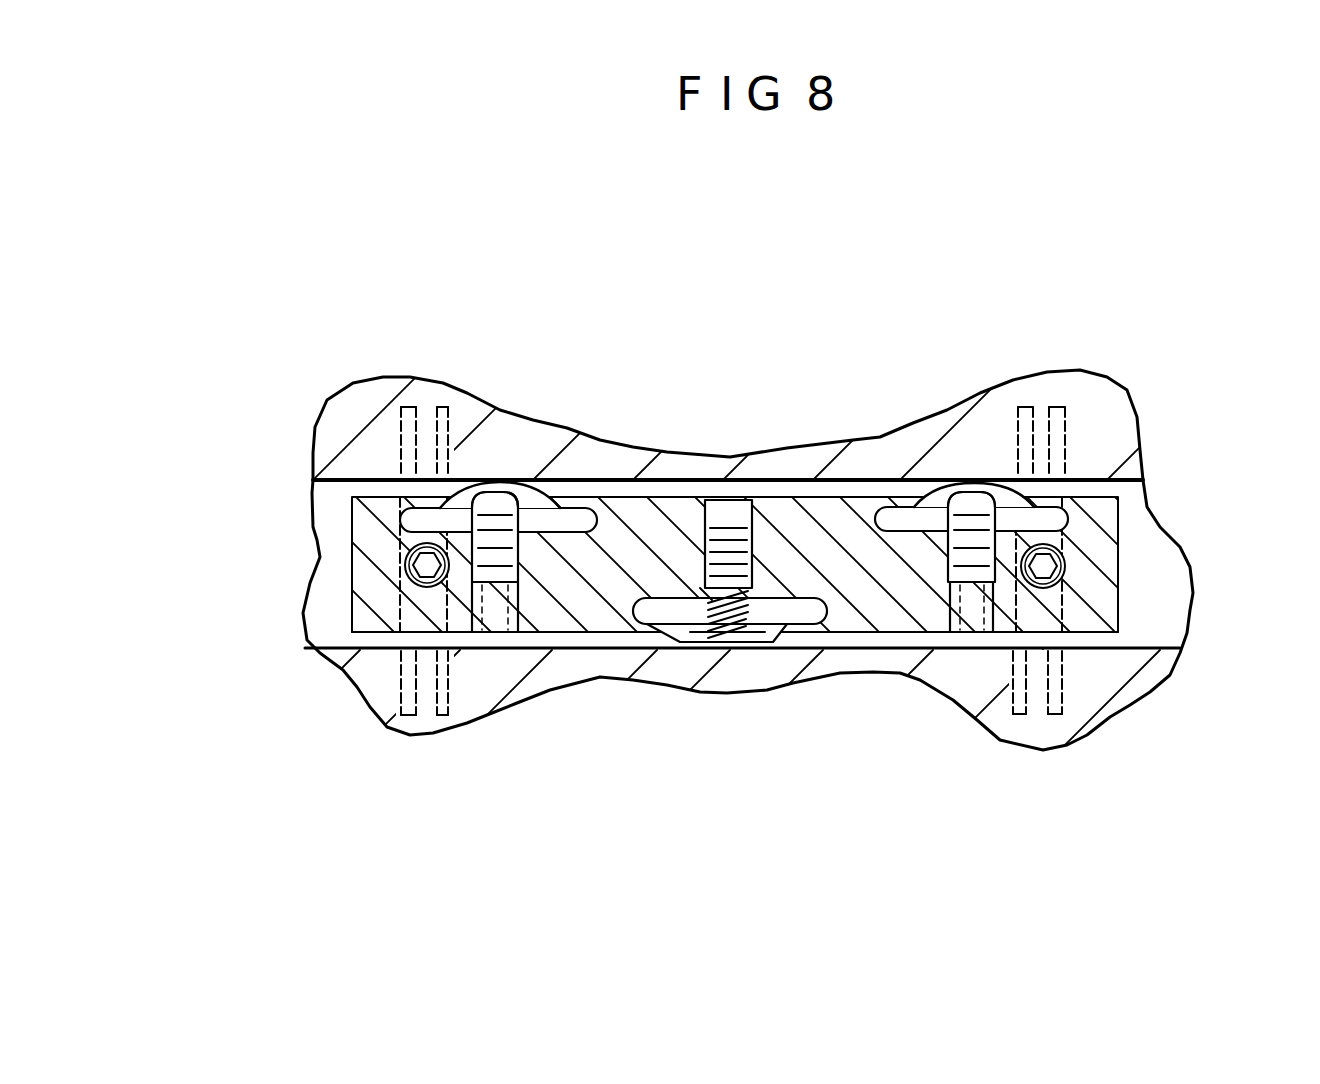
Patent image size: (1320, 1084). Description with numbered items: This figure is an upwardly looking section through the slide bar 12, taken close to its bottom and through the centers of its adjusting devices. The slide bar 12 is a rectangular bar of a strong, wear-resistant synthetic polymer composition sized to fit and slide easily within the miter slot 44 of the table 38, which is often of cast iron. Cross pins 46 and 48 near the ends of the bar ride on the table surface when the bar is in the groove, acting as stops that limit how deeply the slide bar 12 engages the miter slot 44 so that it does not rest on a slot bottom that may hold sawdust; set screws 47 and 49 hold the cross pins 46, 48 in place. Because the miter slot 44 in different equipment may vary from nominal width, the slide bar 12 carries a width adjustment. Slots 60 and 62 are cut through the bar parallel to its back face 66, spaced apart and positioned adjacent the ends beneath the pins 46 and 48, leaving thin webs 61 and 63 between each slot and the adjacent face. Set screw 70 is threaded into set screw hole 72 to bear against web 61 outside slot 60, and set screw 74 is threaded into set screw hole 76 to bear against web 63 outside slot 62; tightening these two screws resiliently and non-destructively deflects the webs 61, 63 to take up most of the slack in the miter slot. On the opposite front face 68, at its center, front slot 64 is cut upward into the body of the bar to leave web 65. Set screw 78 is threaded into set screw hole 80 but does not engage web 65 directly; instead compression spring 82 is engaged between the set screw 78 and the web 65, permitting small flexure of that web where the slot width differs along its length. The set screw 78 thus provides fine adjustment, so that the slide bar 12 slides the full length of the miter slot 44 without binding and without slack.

The slide bar 12 is at (1220, 463).
The table 38 is at (325, 403).
The miter slot 44 is at (1140, 647).
The cross pin 46 is at (420, 717).
The set screw 47 is at (407, 558).
The cross pin 48 is at (1033, 716).
The set screw 49 is at (1065, 568).
The slot 60 is at (537, 492).
The web 61 is at (510, 487).
The slot 62 is at (920, 490).
The web 63 is at (1025, 407).
The front slot 64 is at (765, 640).
The web 65 is at (735, 640).
The back face 66 is at (846, 500).
The front face 68 is at (902, 640).
The set screw 70 is at (500, 487).
The set screw hole 72 is at (501, 600).
The set screw 74 is at (988, 497).
The set screw hole 76 is at (974, 600).
The set screw 78 is at (756, 585).
The set screw hole 80 is at (744, 468).
The compression spring 82 is at (693, 612).